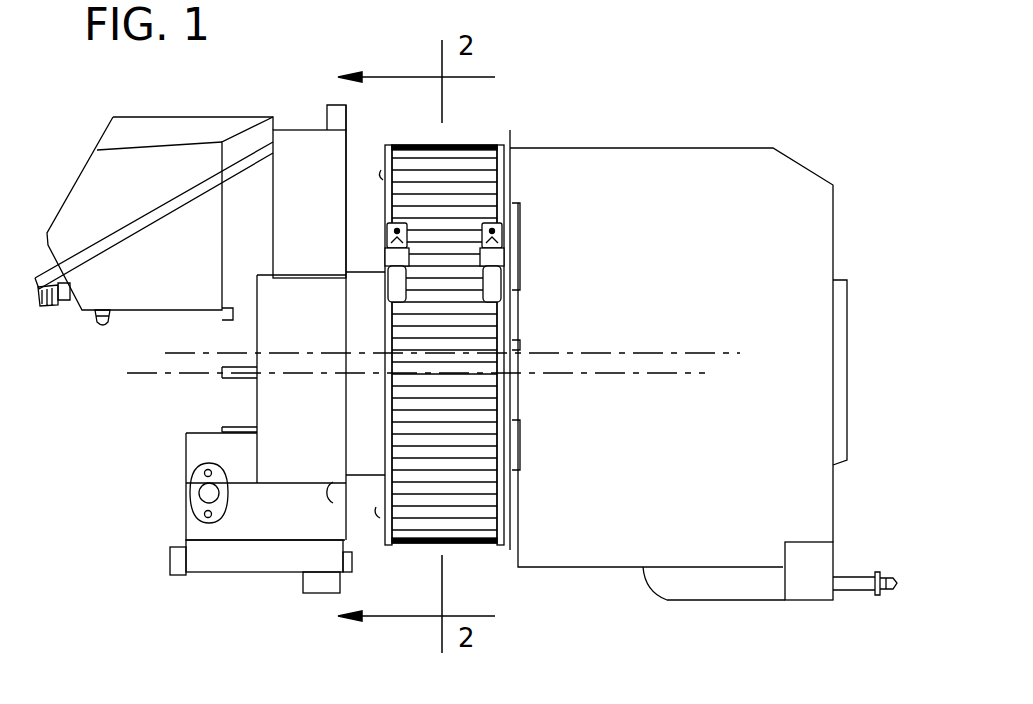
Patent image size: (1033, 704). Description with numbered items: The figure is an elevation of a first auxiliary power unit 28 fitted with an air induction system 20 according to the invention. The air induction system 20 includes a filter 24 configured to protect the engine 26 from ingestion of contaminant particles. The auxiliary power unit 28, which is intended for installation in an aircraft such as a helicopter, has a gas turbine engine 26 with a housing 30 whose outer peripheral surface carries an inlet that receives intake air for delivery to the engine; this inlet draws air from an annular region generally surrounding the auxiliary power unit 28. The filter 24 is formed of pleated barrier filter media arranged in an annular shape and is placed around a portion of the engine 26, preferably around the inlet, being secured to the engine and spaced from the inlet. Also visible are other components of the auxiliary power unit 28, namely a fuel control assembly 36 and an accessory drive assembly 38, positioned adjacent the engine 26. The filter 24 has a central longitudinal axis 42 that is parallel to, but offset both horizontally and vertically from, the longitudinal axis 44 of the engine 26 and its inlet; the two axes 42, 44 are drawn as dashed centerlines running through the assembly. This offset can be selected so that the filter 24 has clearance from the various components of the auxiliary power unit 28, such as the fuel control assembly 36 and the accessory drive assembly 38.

The air induction system 20 is at (499, 366).
The filter 24 is at (477, 145).
The engine 26 is at (567, 147).
The auxiliary power unit 28 is at (521, 335).
The housing 30 is at (363, 485).
The fuel control assembly 36 is at (308, 138).
The accessory drive assembly 38 is at (186, 440).
The central longitudinal axis 42 is at (453, 355).
The longitudinal axis 44 is at (416, 373).